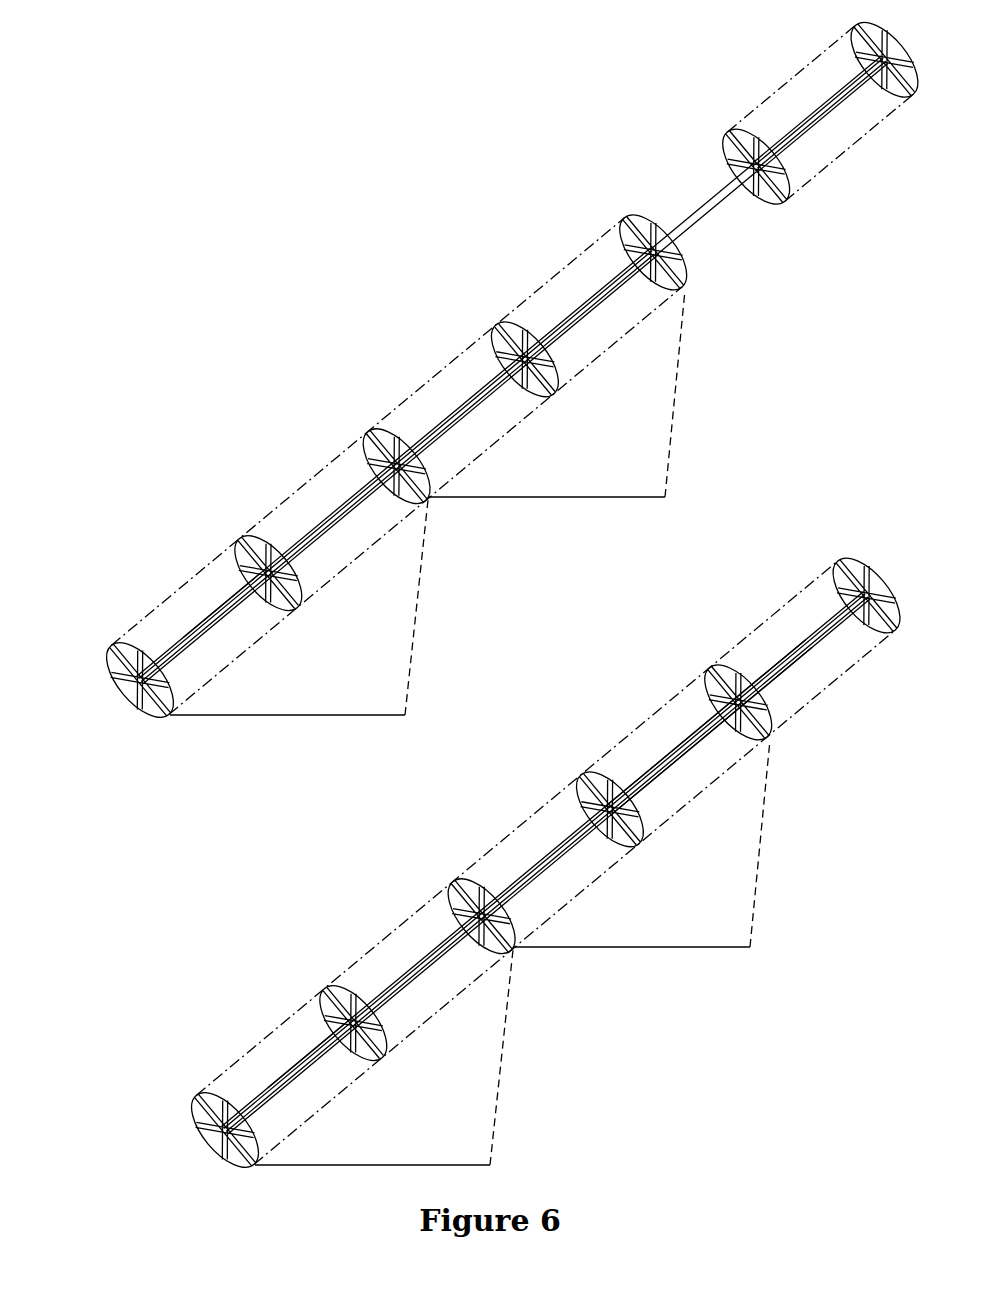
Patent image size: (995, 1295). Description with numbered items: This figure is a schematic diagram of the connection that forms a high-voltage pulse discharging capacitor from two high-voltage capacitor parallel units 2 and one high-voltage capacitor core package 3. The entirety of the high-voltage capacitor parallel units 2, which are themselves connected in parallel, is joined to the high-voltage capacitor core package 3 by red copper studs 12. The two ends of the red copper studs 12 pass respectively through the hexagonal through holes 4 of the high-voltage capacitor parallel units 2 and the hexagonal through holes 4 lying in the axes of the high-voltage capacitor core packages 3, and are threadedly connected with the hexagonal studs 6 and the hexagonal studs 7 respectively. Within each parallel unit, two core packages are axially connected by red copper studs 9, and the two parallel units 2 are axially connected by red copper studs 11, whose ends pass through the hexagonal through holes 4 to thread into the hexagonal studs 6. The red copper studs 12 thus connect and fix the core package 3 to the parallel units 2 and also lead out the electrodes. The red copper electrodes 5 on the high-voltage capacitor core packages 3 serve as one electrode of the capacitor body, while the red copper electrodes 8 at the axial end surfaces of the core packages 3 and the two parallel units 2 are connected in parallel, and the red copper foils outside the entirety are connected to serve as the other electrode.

The high-voltage capacitor parallel unit 2 is at (471, 735).
The high-voltage capacitor core package 3 is at (803, 85).
The hexagonal through hole 4 is at (792, 130).
The red copper electrode A 5 is at (557, 390).
The hexagonal stud A 6 is at (243, 587).
The hexagonal stud 7 is at (885, 62).
The red copper electrode B 8 is at (752, 166).
The red copper stud A 9 is at (522, 352).
The red copper stud B 11 is at (458, 407).
The red copper stud C 12 is at (703, 212).